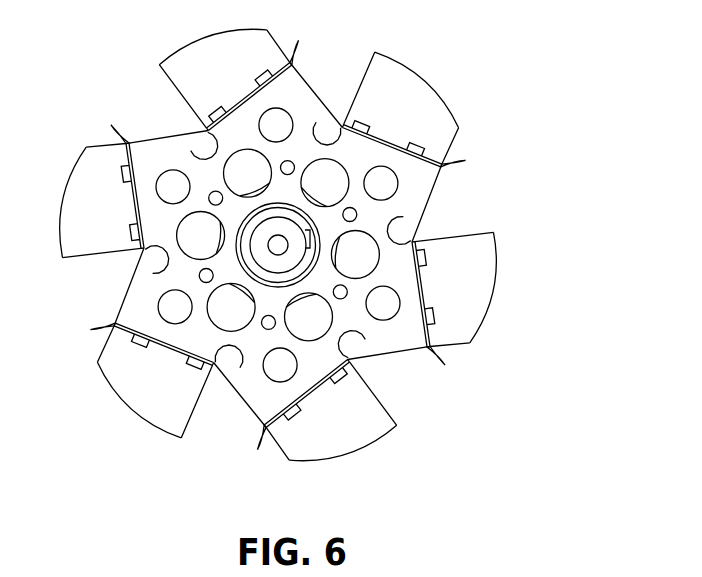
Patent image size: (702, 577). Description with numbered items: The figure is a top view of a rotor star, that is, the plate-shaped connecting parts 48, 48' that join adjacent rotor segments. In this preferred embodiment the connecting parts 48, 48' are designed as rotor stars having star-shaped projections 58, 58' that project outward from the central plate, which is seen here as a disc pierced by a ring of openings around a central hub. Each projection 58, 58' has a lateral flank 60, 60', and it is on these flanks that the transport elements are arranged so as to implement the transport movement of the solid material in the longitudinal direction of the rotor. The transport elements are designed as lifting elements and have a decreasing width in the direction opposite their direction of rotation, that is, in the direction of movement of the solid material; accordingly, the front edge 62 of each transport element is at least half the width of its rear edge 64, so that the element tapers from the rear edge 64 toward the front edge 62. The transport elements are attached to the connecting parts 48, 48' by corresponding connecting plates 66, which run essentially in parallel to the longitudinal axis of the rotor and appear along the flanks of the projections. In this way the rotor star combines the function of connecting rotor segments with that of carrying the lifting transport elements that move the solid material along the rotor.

The connecting part 48 is at (320, 245).
The connecting part 48' is at (278, 245).
The star-shaped projection 58 is at (310, 431).
The star-shaped projection 58' is at (123, 154).
The lateral flank 60 is at (154, 397).
The lateral flank 60' is at (79, 201).
The front edge 62 is at (391, 409).
The rear edge 64 is at (290, 457).
The connecting plate 66 is at (127, 340).